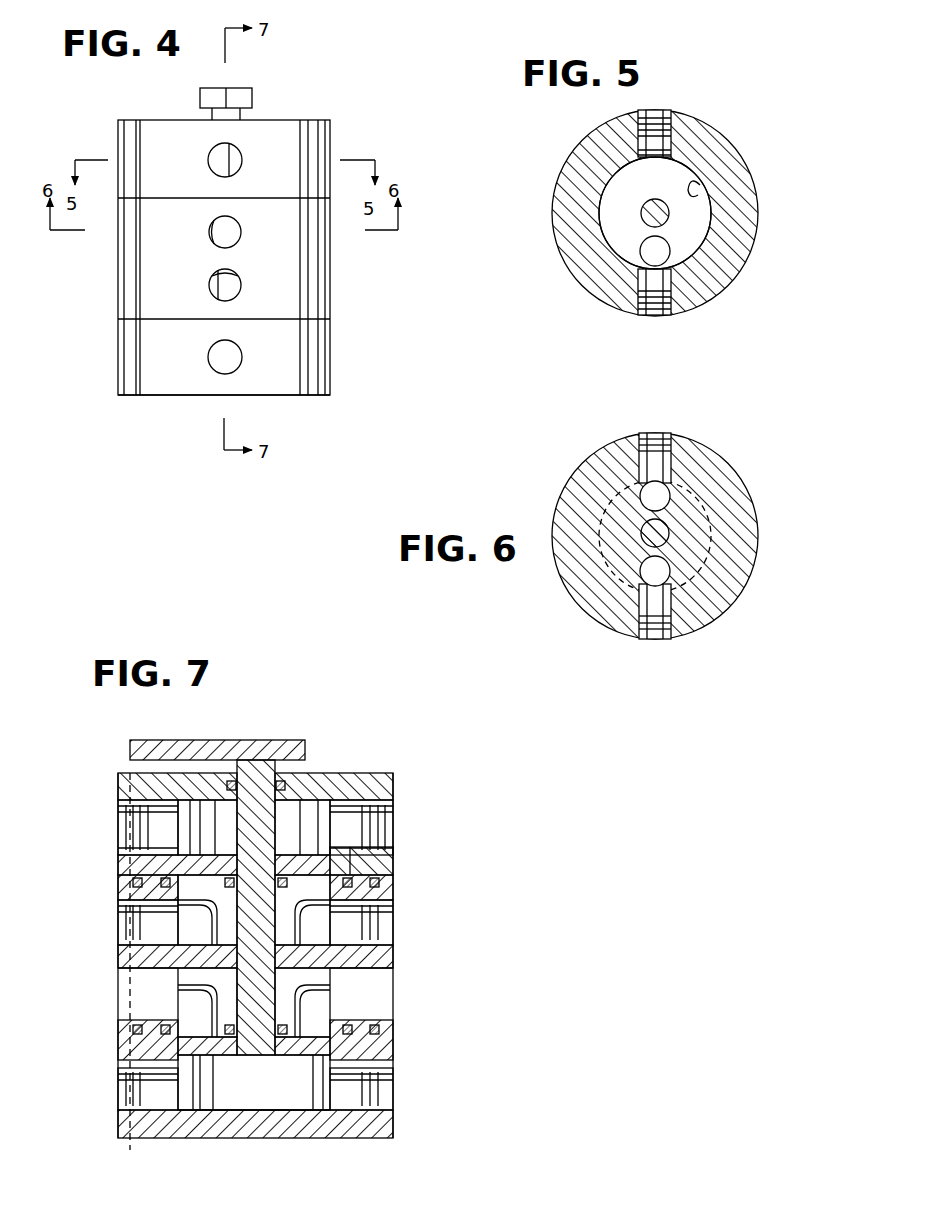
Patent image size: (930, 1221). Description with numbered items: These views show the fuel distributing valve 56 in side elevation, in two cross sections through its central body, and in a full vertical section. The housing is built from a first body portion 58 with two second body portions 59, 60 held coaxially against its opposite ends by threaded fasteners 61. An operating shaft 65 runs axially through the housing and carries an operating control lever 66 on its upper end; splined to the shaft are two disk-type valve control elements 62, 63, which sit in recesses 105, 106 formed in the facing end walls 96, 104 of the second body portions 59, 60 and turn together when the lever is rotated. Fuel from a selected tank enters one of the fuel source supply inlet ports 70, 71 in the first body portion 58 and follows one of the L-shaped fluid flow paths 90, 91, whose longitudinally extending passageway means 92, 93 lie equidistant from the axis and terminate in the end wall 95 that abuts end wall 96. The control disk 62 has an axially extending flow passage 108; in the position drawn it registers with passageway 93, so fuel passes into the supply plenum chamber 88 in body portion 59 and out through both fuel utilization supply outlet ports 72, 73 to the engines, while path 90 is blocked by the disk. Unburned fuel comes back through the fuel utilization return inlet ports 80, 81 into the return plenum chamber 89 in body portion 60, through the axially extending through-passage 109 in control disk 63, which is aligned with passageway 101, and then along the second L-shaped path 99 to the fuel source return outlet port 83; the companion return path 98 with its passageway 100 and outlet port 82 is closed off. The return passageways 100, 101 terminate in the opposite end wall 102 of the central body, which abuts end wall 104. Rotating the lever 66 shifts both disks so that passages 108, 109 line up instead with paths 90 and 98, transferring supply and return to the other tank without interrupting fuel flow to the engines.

In FIG. 4, the fuel distributing valve 56 is at (146, 434).
In FIG. 7, the fuel distributing valve 56 is at (250, 714).
In FIG. 4, the first body portion 58 is at (313, 290).
In FIG. 6, the first body portion 58 is at (747, 542).
In FIG. 7, the first body portion 58 is at (393, 960).
In FIG. 4, the second body portion 59 is at (268, 130).
In FIG. 5, the second body portion 59 is at (740, 255).
In FIG. 7, the second body portion 59 is at (385, 782).
In FIG. 4, the second body portion 60 is at (283, 387).
In FIG. 7, the second body portion 60 is at (390, 1140).
In FIG. 7, the threaded fastener 61 is at (125, 772).
In FIG. 5, the disk-type valve control element 62 is at (697, 215).
In FIG. 6, the disk-type valve control element 62 is at (672, 573).
In FIG. 7, the disk-type valve control element 62 is at (165, 862).
In FIG. 7, the disk-type valve control element 63 is at (200, 1100).
In FIG. 5, the operating shaft 65 is at (657, 200).
In FIG. 6, the operating shaft 65 is at (672, 521).
In FIG. 7, the operating shaft 65 is at (262, 815).
In FIG. 7, the operating control lever 66 is at (192, 740).
In FIG. 4, the fuel source supply inlet port 70 is at (209, 232).
In FIG. 6, the fuel source supply inlet port 70 is at (654, 641).
In FIG. 7, the fuel source supply inlet port 70 is at (118, 940).
In FIG. 6, the fuel source supply inlet port 71 is at (654, 433).
In FIG. 7, the fuel source supply inlet port 71 is at (393, 936).
In FIG. 4, the fuel utilization supply outlet port 72 is at (208, 160).
In FIG. 5, the fuel utilization supply outlet port 72 is at (655, 113).
In FIG. 7, the fuel utilization supply outlet port 72 is at (118, 826).
In FIG. 5, the fuel utilization supply outlet port 73 is at (655, 314).
In FIG. 7, the fuel utilization supply outlet port 73 is at (393, 812).
In FIG. 4, the fuel utilization return inlet port 80 is at (208, 357).
In FIG. 7, the fuel utilization return inlet port 80 is at (118, 1088).
In FIG. 7, the fuel utilization return inlet port 81 is at (393, 1086).
In FIG. 4, the fuel source return outlet port 82 is at (209, 285).
In FIG. 7, the fuel source return outlet port 82 is at (148, 985).
In FIG. 7, the fuel source return outlet port 83 is at (370, 1006).
In FIG. 5, the supply plenum chamber 88 is at (700, 185).
In FIG. 7, the supply plenum chamber 88 is at (300, 800).
In FIG. 7, the return plenum chamber 89 is at (255, 1095).
In FIG. 7, the L-shaped fluid flow path 90 is at (195, 915).
In FIG. 7, the L-shaped fluid flow path 91 is at (350, 920).
In FIG. 7, the longitudinally extending passageway means 92 is at (137, 888).
In FIG. 7, the longitudinally extending passageway means 93 is at (380, 896).
In FIG. 7, the end wall 95 is at (372, 862).
In FIG. 7, the end wall 96 is at (380, 886).
In FIG. 7, the L-shaped fluid flow path 98 is at (195, 1000).
In FIG. 7, the L-shaped fluid flow path 99 is at (340, 986).
In FIG. 7, the longitudinally extending passageway means 100 is at (137, 1034).
In FIG. 7, the longitudinally extending passageway means 101 is at (393, 1031).
In FIG. 7, the end wall 102 is at (393, 1058).
In FIG. 7, the end wall 104 is at (393, 1042).
In FIG. 7, the recess 105 is at (393, 855).
In FIG. 7, the recess 106 is at (130, 1058).
In FIG. 5, the axially extending flow passage 108 is at (644, 258).
In FIG. 7, the axially extending flow passage 108 is at (318, 852).
In FIG. 7, the axially extending through-passage 109 is at (305, 1060).